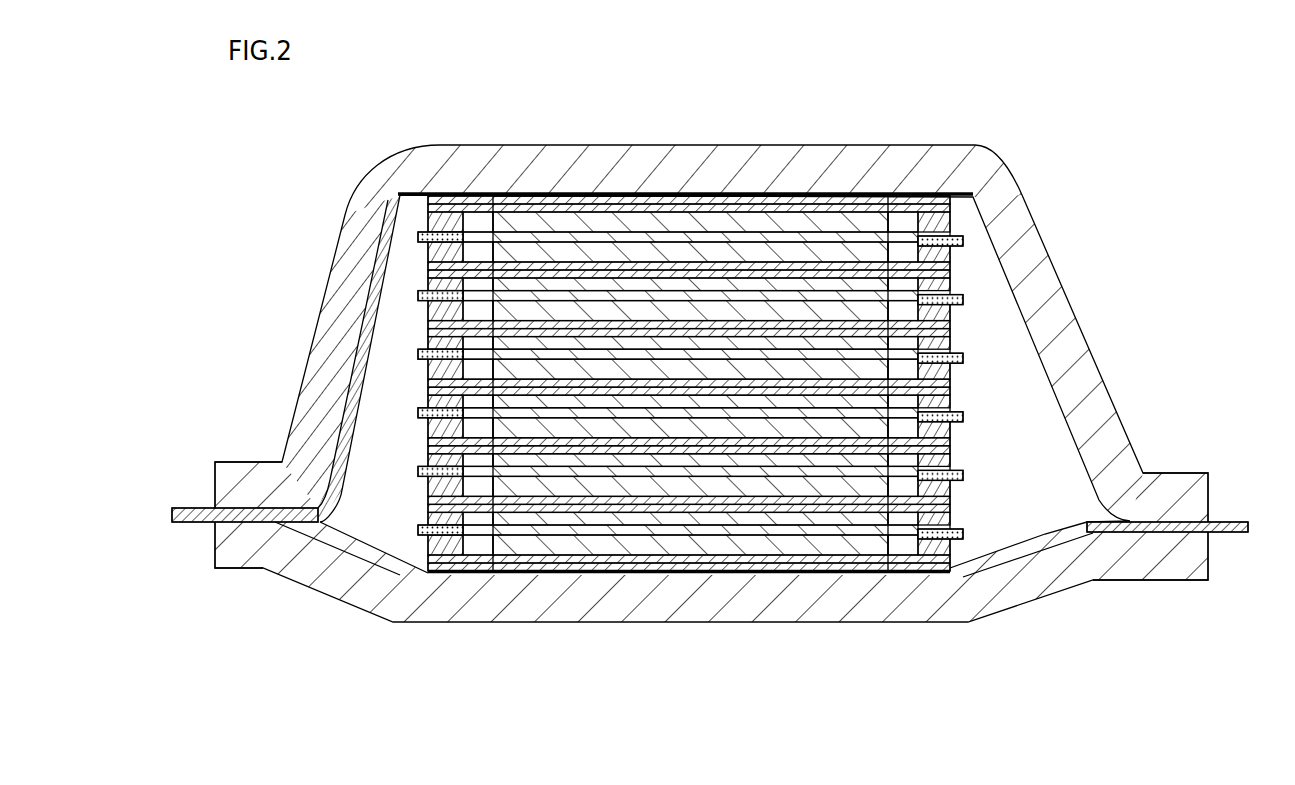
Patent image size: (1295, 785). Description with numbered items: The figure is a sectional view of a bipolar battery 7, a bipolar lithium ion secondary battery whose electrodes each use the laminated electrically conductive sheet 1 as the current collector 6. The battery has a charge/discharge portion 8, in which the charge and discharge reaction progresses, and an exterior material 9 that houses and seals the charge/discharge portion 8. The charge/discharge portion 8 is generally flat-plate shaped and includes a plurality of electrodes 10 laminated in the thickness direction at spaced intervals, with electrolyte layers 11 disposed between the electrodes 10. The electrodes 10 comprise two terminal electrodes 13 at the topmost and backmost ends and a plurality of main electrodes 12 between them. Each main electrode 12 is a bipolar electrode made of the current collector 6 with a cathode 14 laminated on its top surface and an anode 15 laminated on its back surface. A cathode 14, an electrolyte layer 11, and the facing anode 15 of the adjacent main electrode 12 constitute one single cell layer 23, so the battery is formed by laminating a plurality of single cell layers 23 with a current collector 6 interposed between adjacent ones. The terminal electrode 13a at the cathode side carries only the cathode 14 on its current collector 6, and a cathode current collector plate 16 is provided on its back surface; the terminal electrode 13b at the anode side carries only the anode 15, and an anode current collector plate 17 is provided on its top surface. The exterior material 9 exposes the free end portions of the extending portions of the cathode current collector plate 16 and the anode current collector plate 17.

The laminated electrically conductive sheet 1 is at (740, 265).
The current collector 6 is at (836, 642).
The bipolar battery 7 is at (720, 774).
The charge/discharge portion 8 is at (991, 439).
The exterior material 9 is at (1197, 473).
The electrode 10 is at (707, 409).
The electrolyte layer 11 is at (627, 290).
The main electrode 12 is at (419, 420).
The terminal electrode 13 is at (803, 222).
The terminal electrode at the side of the cathode 13a is at (679, 475).
The terminal electrode at the side of the anode 13b is at (867, 319).
The cathode 14 is at (565, 305).
The anode 15 is at (668, 255).
The cathode current collector plate 16 is at (1228, 521).
The anode current collector plate 17 is at (200, 508).
The single cell layer 23 is at (692, 84).